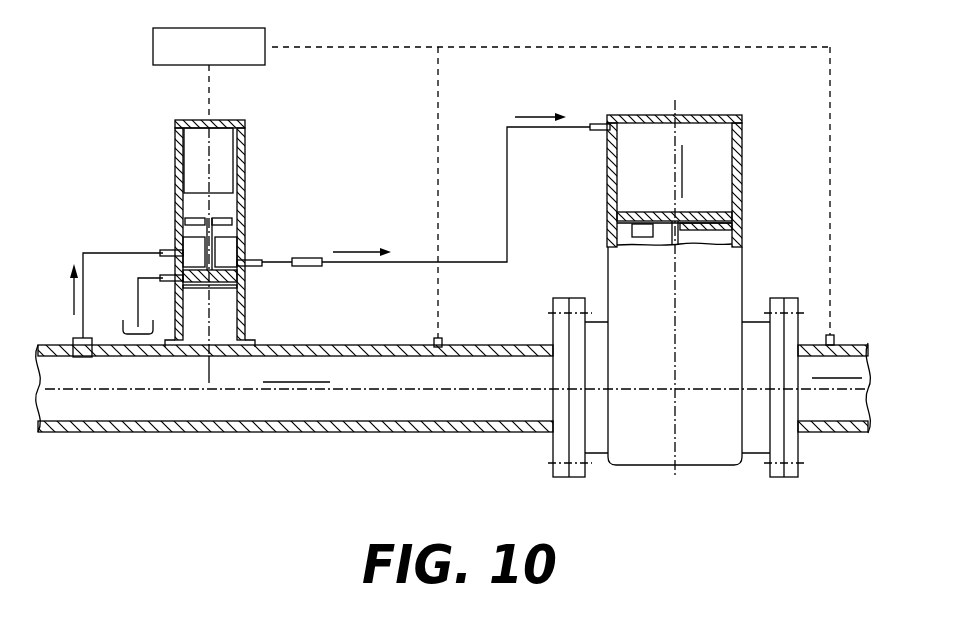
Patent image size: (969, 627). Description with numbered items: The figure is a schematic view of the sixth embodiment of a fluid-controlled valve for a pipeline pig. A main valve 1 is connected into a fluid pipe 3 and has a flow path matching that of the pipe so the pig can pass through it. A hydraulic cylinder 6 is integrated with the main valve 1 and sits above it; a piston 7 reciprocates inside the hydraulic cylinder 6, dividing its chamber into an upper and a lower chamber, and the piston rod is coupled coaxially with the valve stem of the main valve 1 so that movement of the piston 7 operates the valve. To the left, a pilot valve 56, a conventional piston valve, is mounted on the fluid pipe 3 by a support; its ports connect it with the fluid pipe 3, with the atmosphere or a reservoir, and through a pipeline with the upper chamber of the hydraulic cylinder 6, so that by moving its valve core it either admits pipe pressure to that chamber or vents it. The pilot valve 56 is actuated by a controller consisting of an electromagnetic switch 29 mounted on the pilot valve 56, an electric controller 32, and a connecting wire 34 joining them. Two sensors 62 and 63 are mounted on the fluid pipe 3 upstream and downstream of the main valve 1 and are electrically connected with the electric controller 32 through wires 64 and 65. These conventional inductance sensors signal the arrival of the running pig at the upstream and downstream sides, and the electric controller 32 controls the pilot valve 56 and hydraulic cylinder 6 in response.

The main valve 1 is at (650, 430).
The fluid pipe 3 is at (343, 405).
The hydraulic cylinder 6 is at (710, 125).
The piston 7 is at (720, 212).
The electromagnetic switch 29 is at (228, 150).
The electric controller 32 is at (265, 30).
The connecting wire 34 is at (209, 105).
The pilot valve 56 is at (247, 312).
The sensor 62 is at (440, 338).
The sensor 63 is at (835, 338).
The wire 64 is at (438, 176).
The wire 65 is at (833, 145).